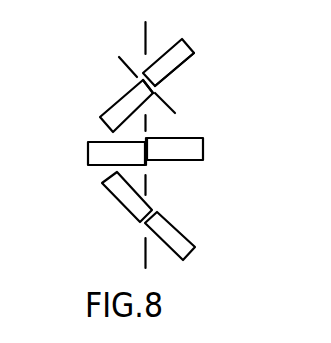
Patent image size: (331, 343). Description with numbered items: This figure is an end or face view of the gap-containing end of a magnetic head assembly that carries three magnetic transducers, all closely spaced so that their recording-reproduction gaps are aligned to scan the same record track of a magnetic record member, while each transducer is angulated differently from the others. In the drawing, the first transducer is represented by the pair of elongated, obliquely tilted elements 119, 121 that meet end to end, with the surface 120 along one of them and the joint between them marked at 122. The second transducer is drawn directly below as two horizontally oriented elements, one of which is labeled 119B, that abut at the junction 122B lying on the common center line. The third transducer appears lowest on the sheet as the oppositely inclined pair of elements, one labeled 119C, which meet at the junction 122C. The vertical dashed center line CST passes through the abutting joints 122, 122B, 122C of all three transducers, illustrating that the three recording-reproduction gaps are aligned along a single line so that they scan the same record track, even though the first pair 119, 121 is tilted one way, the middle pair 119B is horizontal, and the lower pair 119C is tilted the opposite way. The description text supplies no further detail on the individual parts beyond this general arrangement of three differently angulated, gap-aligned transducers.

The light transmitting plate 119 is at (182, 39).
The reflecting surface 120 is at (176, 70).
The second plate 121 is at (107, 110).
The joint portion 122 is at (147, 82).
The plate (second arrangement) 119B is at (88, 157).
The joint portion (second arrangement) 122B is at (147, 163).
The plate (third arrangement) 119C is at (120, 198).
The joint portion (third arrangement) 122C is at (158, 213).
The center line / optical axis CST is at (146, 268).